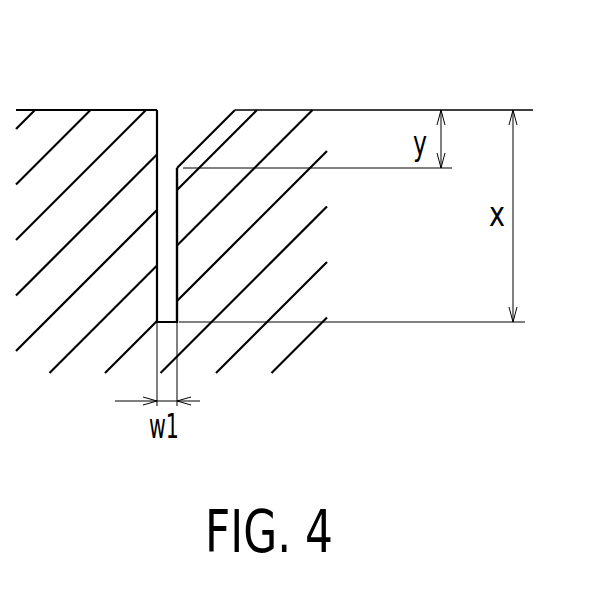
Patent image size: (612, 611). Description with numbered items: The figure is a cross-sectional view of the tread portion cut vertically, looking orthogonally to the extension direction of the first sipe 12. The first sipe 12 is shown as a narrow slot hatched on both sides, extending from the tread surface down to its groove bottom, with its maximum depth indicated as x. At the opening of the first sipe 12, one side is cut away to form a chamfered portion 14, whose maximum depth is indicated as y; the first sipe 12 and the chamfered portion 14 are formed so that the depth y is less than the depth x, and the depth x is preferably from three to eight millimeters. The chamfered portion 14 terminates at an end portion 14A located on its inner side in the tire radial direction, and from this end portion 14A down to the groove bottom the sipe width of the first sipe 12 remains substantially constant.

The first sipe 12 is at (167, 293).
The chamfered portion 14 is at (207, 137).
The end portion 14A is at (176, 166).